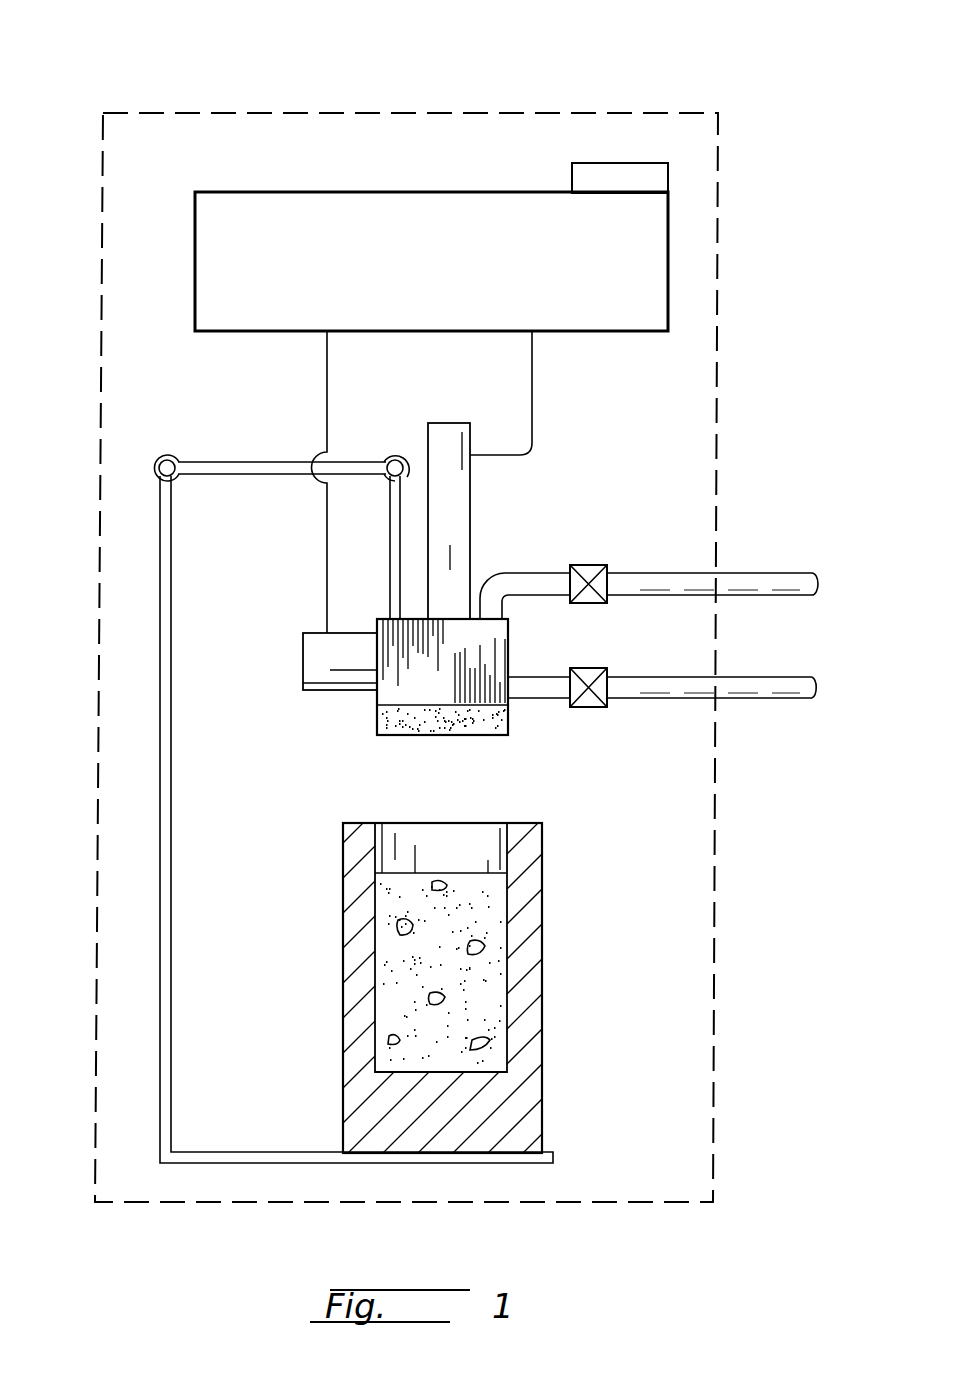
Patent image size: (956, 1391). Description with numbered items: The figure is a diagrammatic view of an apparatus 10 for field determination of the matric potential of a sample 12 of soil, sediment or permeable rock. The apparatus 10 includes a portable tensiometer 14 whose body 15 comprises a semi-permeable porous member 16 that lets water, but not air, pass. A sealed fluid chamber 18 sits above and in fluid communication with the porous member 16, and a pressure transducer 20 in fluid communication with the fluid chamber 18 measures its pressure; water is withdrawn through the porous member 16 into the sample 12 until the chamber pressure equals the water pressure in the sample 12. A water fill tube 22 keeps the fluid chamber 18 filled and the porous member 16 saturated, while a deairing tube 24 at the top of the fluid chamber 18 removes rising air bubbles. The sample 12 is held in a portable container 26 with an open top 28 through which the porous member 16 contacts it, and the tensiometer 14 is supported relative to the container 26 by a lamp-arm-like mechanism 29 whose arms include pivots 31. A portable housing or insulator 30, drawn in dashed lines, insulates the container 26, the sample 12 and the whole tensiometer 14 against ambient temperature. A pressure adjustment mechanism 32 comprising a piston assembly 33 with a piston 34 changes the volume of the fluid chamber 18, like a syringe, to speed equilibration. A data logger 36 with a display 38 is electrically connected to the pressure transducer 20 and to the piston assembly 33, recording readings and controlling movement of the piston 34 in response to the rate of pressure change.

The apparatus 10 is at (155, 47).
The sample 12 is at (410, 972).
The portable tensiometer 14 is at (535, 530).
The body 15 is at (375, 605).
The porous member 16 is at (440, 735).
The fluid chamber 18 is at (508, 640).
The pressure transducer 20 is at (303, 660).
The water fill tube 22 is at (760, 700).
The deairing tube 24 is at (750, 575).
The container 26 is at (542, 1107).
The open top 28 is at (530, 823).
The mechanism 29 is at (250, 474).
The insulator 30 is at (712, 1107).
The pivots 31 is at (163, 455).
The pressure adjustment mechanism 32 is at (550, 408).
The piston assembly 33 is at (460, 405).
The piston 34 is at (470, 483).
The data logger 36 is at (195, 268).
The display 38 is at (572, 185).